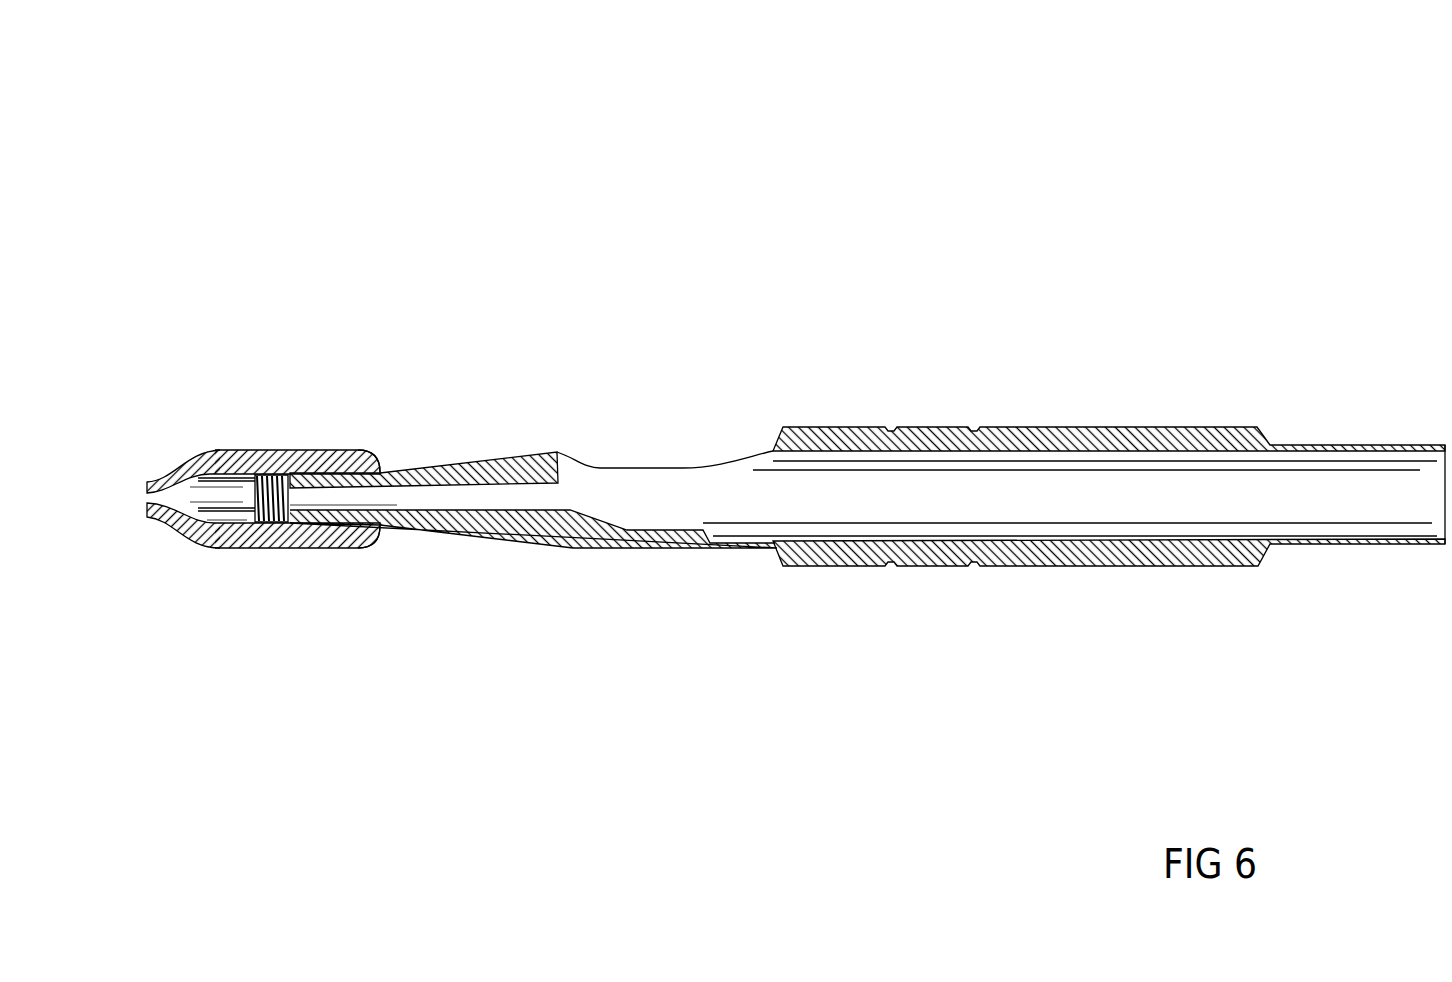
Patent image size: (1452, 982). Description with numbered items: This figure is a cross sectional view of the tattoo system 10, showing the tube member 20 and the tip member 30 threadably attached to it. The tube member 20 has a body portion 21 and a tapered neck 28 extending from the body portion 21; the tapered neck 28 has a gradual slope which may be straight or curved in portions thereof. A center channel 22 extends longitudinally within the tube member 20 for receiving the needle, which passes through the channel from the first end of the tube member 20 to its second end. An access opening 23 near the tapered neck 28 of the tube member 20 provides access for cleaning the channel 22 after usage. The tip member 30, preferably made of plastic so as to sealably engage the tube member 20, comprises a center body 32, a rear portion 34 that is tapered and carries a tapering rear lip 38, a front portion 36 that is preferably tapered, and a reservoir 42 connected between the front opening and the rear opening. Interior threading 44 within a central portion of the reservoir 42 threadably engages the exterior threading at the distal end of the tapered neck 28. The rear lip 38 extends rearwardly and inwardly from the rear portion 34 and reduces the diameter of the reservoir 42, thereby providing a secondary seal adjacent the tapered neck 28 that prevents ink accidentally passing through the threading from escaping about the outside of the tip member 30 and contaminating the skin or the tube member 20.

The tattoo system 10 is at (972, 258).
The tube member 20 is at (870, 576).
The body portion 21 is at (1082, 438).
The center channel 22 is at (546, 497).
The access opening 23 is at (663, 468).
The tapered neck 28 is at (447, 466).
The tip member 30 is at (297, 562).
The center body 32 is at (241, 478).
The rear portion 34 is at (362, 540).
The front portion 36 is at (155, 482).
The rear lip 38 is at (382, 470).
The reservoir 42 is at (227, 500).
The interior threading 44 is at (282, 478).